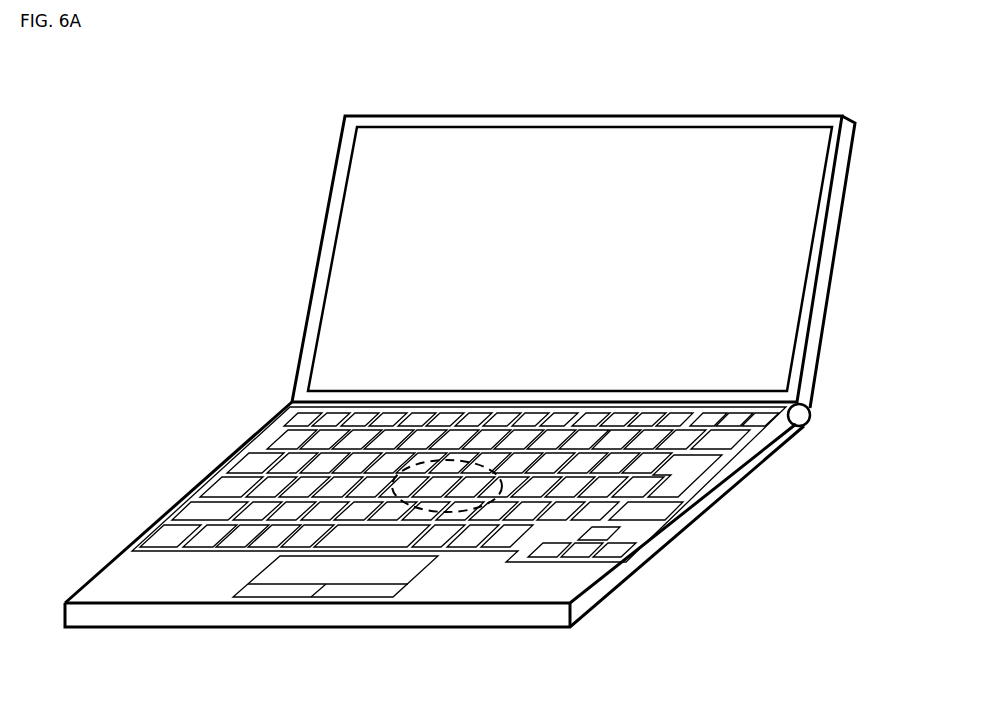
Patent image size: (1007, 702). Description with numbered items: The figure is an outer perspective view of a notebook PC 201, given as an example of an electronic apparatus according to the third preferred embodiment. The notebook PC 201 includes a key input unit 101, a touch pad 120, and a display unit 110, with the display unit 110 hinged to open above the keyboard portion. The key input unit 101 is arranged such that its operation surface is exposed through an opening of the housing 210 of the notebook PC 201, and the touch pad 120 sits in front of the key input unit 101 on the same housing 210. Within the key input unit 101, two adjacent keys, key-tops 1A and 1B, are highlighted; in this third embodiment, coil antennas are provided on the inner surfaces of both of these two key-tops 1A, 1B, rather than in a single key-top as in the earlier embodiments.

The notebook PC 201 is at (751, 78).
The display unit 110 is at (363, 207).
The key input unit 101 is at (238, 434).
The housing 210 is at (125, 573).
The touch pad 120 is at (407, 570).
The key-top 1A is at (430, 487).
The key-top 1B is at (465, 487).